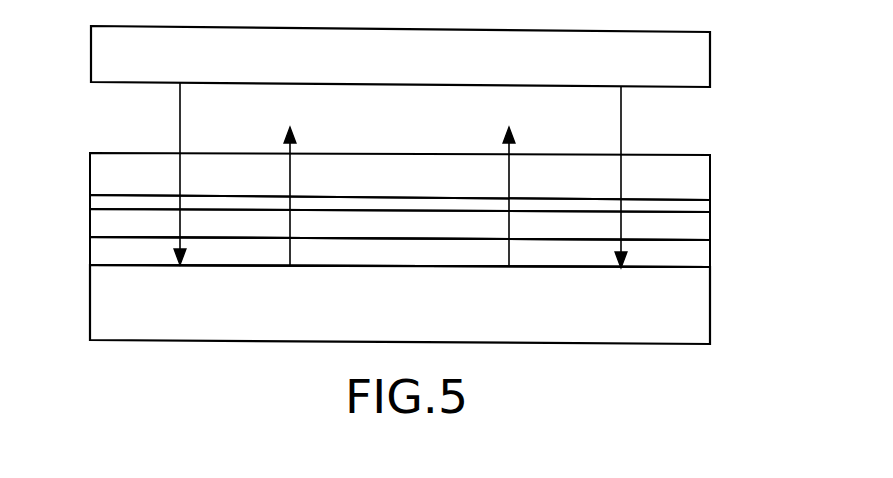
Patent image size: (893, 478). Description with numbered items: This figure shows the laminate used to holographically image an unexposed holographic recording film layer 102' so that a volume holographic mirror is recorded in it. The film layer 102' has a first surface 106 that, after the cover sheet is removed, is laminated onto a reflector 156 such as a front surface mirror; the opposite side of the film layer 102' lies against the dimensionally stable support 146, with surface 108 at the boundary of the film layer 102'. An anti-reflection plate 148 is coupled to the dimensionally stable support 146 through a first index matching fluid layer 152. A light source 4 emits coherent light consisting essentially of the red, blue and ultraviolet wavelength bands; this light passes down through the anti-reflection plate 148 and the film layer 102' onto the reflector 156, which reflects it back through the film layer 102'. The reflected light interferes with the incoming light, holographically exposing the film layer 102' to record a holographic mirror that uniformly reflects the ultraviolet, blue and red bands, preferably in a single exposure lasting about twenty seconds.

The light source 4 is at (712, 58).
The anti-reflection plate 148 is at (712, 176).
The first index matching fluid layer 152 is at (712, 204).
The dimensionally stable support 146 is at (712, 230).
The holographic recording film layer 102' is at (437, 254).
The reflector 156 is at (712, 309).
The interface 108 is at (108, 236).
The first surface 106 is at (105, 266).